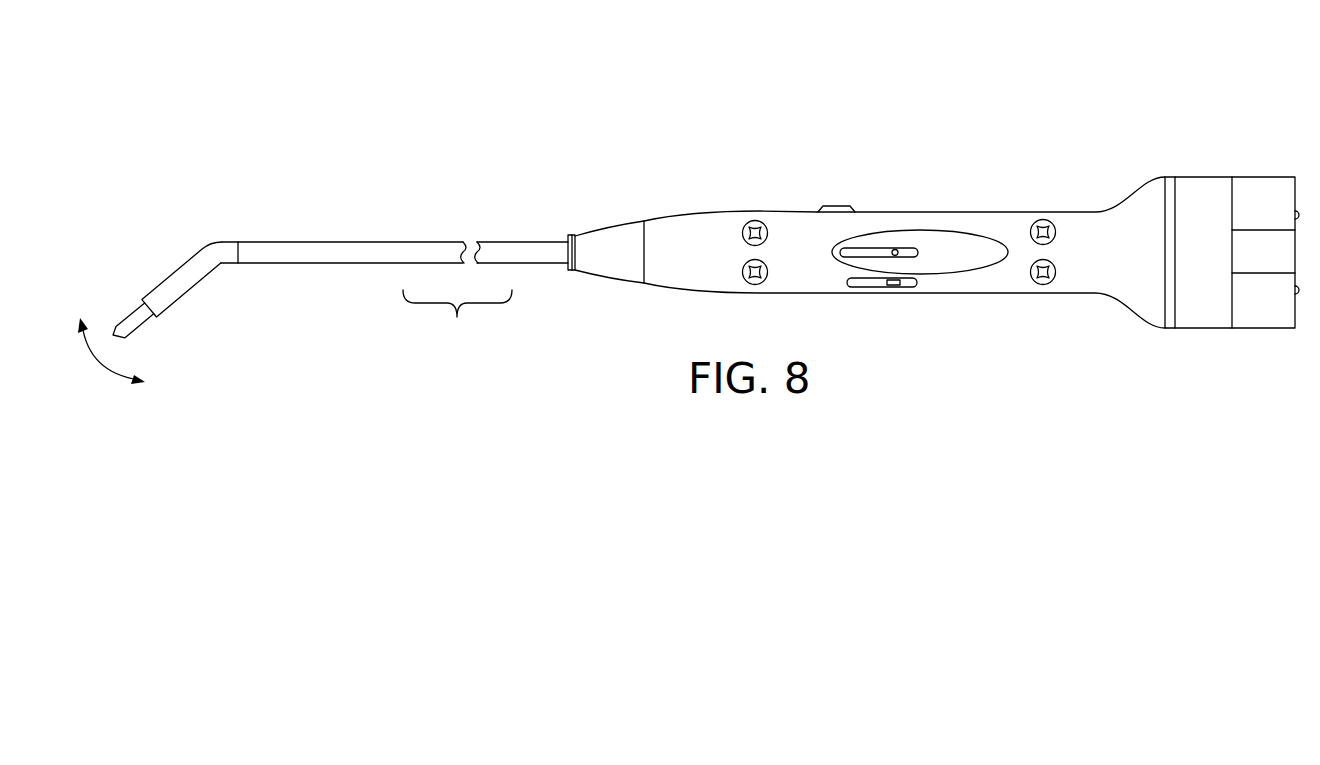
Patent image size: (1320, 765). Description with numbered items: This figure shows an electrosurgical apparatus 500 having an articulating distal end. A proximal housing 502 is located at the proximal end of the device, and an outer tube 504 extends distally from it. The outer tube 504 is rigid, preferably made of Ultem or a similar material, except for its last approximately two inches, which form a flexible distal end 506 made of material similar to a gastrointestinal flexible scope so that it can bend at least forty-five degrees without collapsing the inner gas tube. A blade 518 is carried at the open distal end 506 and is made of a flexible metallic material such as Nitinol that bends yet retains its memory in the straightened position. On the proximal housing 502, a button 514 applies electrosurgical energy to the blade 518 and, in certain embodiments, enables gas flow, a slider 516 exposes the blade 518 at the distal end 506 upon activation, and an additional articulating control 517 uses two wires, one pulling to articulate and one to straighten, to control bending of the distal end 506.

The electrosurgical apparatus 500 is at (319, 118).
The proximal housing 502 is at (1072, 218).
The outer tube 504 is at (413, 242).
The distal end 506 is at (178, 270).
The button 514 is at (816, 192).
The slider 516 is at (905, 240).
The articulating control 517 is at (888, 285).
The blade 518 is at (125, 338).